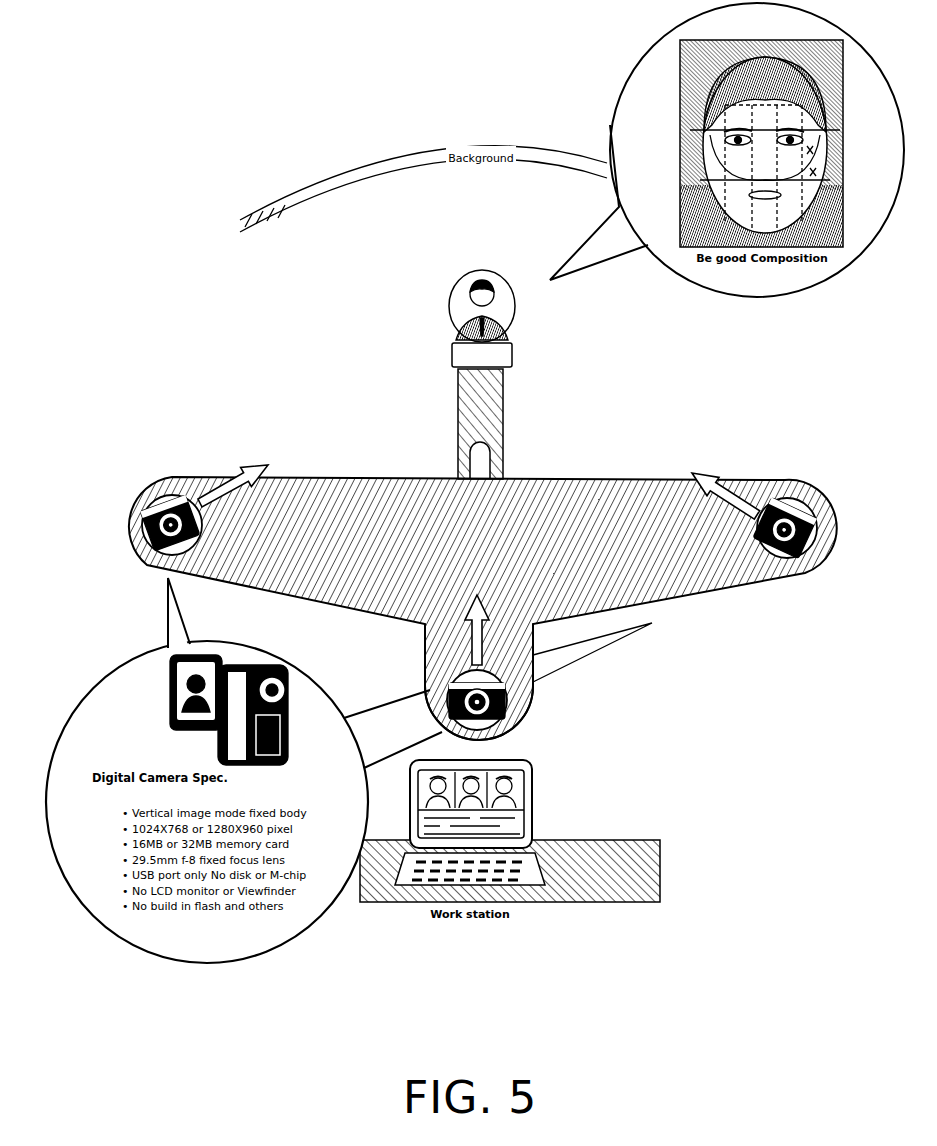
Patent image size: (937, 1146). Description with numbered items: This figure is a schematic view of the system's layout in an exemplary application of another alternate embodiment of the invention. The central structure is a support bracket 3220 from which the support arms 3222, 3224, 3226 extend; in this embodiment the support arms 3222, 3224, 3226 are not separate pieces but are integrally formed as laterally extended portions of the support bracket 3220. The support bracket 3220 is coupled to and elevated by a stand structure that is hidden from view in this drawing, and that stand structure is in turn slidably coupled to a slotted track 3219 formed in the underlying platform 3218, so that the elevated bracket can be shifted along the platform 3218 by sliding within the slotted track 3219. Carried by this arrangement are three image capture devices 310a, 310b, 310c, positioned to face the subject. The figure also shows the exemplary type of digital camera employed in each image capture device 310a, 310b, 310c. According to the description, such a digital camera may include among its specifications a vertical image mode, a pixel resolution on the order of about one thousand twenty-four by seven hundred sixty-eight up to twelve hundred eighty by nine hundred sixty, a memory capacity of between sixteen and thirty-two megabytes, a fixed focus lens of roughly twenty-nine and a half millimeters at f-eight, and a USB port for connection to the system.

The image capture device 310a is at (180, 490).
The image capture device 310b is at (510, 716).
The image capture device 310c is at (808, 502).
The platform 3218 is at (497, 423).
The slotted track 3219 is at (485, 463).
The support bracket 3220 is at (600, 472).
The support arm 3222 is at (292, 490).
The support arm 3224 is at (700, 582).
The support arm 3226 is at (520, 660).